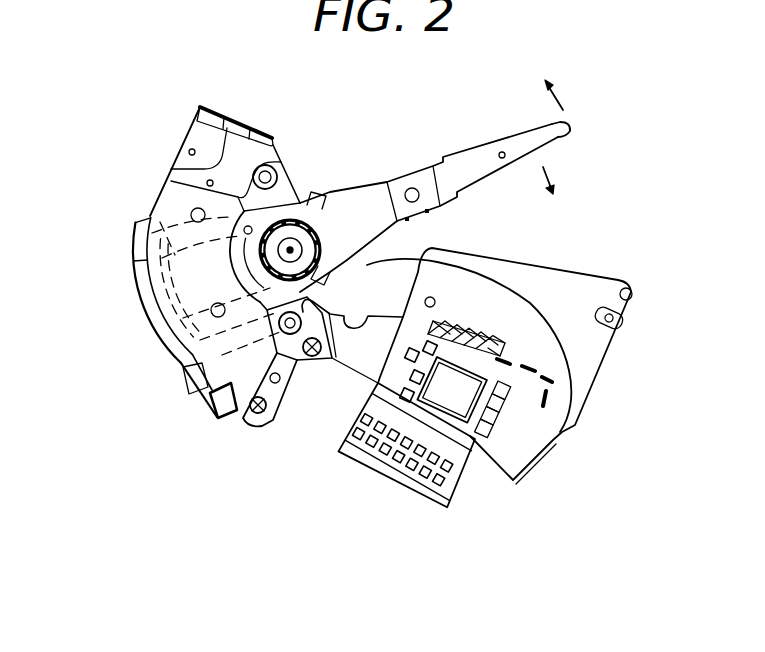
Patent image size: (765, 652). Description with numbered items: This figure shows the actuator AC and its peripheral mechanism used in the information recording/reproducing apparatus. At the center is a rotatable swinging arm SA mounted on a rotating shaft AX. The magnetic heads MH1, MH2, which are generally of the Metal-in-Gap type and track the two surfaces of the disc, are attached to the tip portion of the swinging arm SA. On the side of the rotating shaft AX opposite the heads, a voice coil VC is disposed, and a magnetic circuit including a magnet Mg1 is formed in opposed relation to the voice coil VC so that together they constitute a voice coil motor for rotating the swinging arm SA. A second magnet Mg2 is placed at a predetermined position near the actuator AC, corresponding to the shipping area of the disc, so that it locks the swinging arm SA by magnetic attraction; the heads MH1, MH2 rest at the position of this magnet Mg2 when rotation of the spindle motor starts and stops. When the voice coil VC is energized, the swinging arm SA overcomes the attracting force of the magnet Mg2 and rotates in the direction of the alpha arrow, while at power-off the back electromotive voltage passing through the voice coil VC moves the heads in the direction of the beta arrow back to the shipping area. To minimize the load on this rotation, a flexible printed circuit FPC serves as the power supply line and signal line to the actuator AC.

The magnet Mg1 is at (175, 250).
The magnet Mg2 is at (212, 398).
The voice coil VC is at (150, 217).
The rotating shaft AX is at (291, 247).
The actuator AC is at (398, 137).
The swinging arm SA is at (478, 168).
The magnetic head MH1 is at (572, 129).
The magnetic head MH2 is at (646, 110).
The flexible printed circuit FPC is at (538, 307).